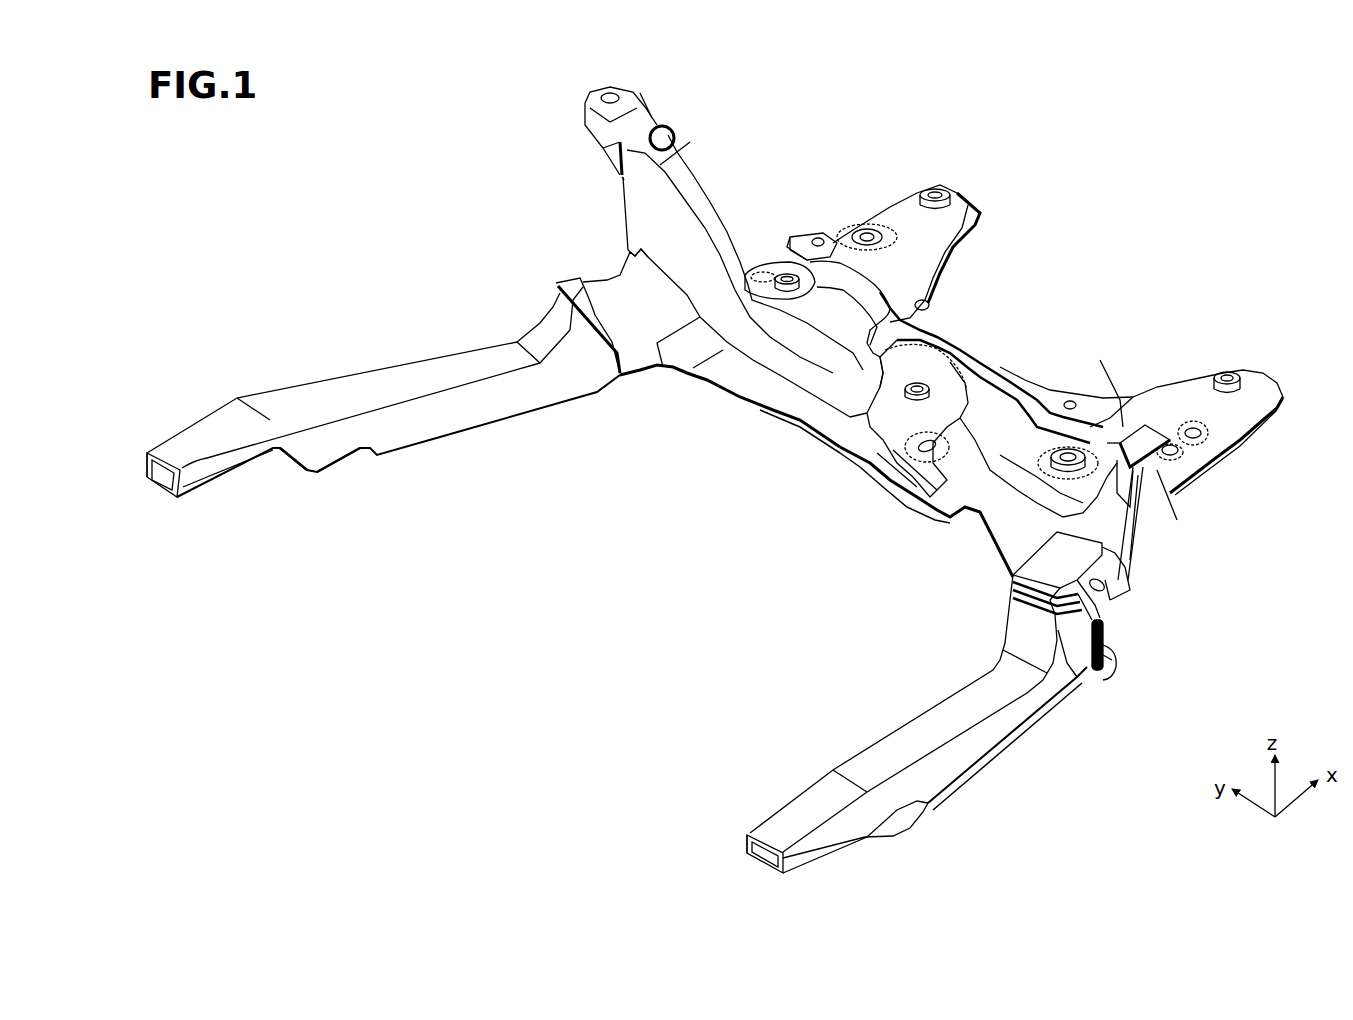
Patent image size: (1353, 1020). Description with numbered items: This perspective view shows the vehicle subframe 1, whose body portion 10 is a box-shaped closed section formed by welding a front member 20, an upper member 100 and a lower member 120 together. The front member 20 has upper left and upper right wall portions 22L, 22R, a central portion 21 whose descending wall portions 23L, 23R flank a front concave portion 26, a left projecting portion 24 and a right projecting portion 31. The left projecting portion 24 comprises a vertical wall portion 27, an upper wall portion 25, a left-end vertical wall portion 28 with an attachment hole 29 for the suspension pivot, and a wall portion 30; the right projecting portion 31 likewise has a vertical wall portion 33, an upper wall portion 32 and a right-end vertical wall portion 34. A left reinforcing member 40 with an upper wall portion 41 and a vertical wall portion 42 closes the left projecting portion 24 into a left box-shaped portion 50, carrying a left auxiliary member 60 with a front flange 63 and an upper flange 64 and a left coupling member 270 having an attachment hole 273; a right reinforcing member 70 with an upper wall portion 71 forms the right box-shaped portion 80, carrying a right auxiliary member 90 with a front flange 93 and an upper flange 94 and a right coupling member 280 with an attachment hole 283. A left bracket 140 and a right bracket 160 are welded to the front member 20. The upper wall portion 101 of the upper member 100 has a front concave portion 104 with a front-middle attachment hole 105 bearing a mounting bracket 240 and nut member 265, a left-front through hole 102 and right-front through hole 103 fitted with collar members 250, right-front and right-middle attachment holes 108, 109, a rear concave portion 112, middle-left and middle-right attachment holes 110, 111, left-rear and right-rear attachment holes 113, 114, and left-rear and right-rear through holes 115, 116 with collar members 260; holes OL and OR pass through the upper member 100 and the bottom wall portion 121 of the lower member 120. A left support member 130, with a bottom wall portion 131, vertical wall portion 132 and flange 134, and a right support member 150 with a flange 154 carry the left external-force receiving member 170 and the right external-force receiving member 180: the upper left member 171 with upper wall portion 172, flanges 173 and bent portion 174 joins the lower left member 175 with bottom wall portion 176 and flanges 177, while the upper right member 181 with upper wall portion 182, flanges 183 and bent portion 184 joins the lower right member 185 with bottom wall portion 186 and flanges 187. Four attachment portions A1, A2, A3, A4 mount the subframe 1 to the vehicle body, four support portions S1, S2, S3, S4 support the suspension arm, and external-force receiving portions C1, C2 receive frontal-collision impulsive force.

The subframe 1 is at (1040, 193).
The body portion 10 is at (787, 447).
The front member 20 is at (853, 493).
The central portion 21 is at (877, 487).
The upper right wall portion 22R is at (793, 347).
The upper left wall portion 22L is at (997, 467).
The wall portion 23R is at (800, 377).
The wall portion 23L is at (987, 500).
The left projecting portion 24 is at (1078, 515).
The upper wall portion 25 is at (1068, 516).
The front concave portion 26 is at (880, 423).
The vertical wall portion 27 is at (1107, 567).
The left-end vertical wall portion 28 is at (1103, 583).
The attachment hole 29 is at (1103, 605).
The wall portion 30 is at (1107, 563).
The right projecting portion 31 is at (613, 203).
The upper wall portion 32 is at (645, 153).
The vertical wall portion 33 is at (643, 213).
The right-end vertical wall portion 34 is at (633, 250).
The left reinforcing member 40 is at (1167, 515).
The upper wall portion 41 is at (1117, 440).
The vertical wall portion 42 is at (1133, 517).
The left box-shaped portion 50 is at (1197, 585).
The left auxiliary member 60 is at (1158, 430).
The front flange 63 is at (1133, 513).
The upper flange 64 is at (1153, 430).
The right reinforcing member 70 is at (710, 165).
The upper wall portion 71 is at (675, 143).
The right box-shaped portion 80 is at (597, 192).
The right auxiliary member 90 is at (667, 125).
The front flange 93 is at (620, 167).
The upper flange 94 is at (656, 125).
The upper member 100 is at (1157, 373).
The upper wall portion 101 is at (930, 248).
The left-front through hole 102 is at (1070, 448).
The right-front through hole 103 is at (887, 283).
The front concave portion 104 is at (870, 425).
The front-middle attachment hole 105 is at (912, 448).
The right-front attachment hole 108 is at (763, 273).
The right-middle attachment hole 109 is at (820, 240).
The middle-left attachment hole 110 is at (1070, 400).
The middle-right attachment hole 111 is at (925, 300).
The rear concave portion 112 is at (783, 270).
The left-rear attachment hole 113 is at (1207, 433).
The right-rear attachment hole 114 is at (867, 230).
The left-rear through hole 115 is at (1223, 367).
The right-rear through hole 116 is at (933, 187).
The lower member 120 is at (1217, 470).
The bottom wall portion 121 is at (1235, 468).
The left support member 130 is at (1113, 640).
The bottom wall portion 131 is at (1100, 660).
The vertical wall portion 132 is at (1110, 647).
The flange 134 is at (1077, 623).
The left bracket 140 is at (992, 573).
The right support member 150 is at (550, 275).
The flange 154 is at (557, 287).
The right bracket 160 is at (697, 393).
The left external-force receiving member 170 is at (847, 697).
The upper left member 171 is at (937, 675).
The upper wall portion 172 is at (900, 730).
The flanges 173 is at (993, 733).
The bent portion 174 is at (990, 657).
The lower left member 175 is at (977, 797).
The bottom wall portion 176 is at (950, 793).
The flanges 177 is at (903, 818).
The right external-force receiving member 180 is at (247, 343).
The upper right member 181 is at (353, 353).
The upper wall portion 182 is at (403, 380).
The flanges 183 is at (443, 423).
The bent portion 184 is at (507, 332).
The lower right member 185 is at (313, 497).
The bottom wall portion 186 is at (360, 460).
The flanges 187 is at (277, 467).
The mounting bracket 240 is at (977, 360).
The collar member 250 is at (783, 270).
The collar member 260 is at (943, 187).
The nut member 265 is at (917, 383).
The left coupling member 270 is at (1217, 443).
The attachment hole 273 is at (1180, 457).
The right coupling member 280 is at (583, 100).
The attachment hole 283 is at (610, 92).
The first attachment portion A1 is at (1218, 485).
The second attachment portion A2 is at (657, 110).
The third attachment portion A3 is at (1250, 370).
The fourth attachment portion A4 is at (963, 182).
The first support portion S1 is at (1152, 647).
The second support portion S2 is at (575, 262).
The third support portion S3 is at (1253, 433).
The fourth support portion S4 is at (860, 213).
The first external-force receiving portion C1 is at (738, 842).
The second external-force receiving portion C2 is at (165, 507).
The hole OR is at (867, 313).
The hole OL is at (1097, 447).